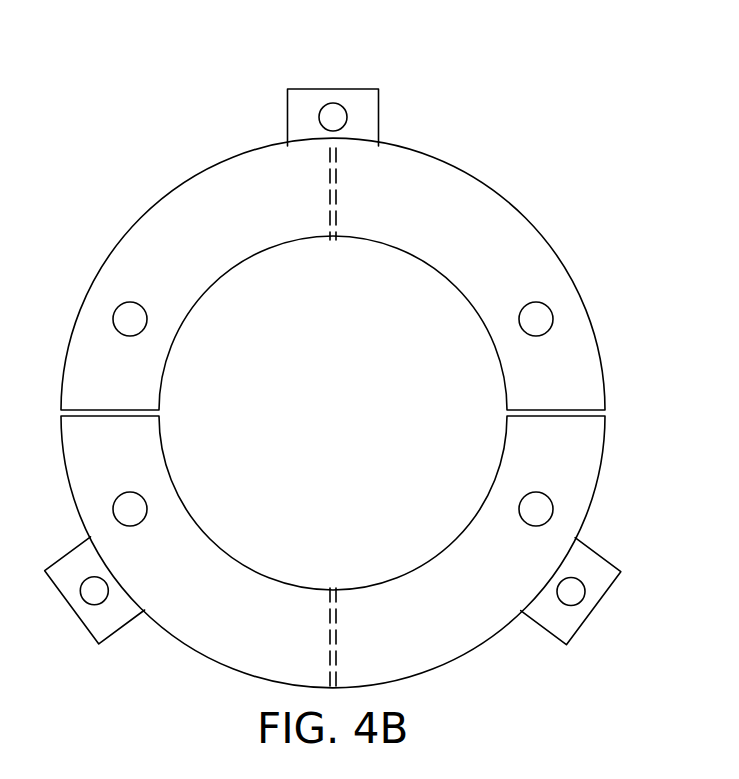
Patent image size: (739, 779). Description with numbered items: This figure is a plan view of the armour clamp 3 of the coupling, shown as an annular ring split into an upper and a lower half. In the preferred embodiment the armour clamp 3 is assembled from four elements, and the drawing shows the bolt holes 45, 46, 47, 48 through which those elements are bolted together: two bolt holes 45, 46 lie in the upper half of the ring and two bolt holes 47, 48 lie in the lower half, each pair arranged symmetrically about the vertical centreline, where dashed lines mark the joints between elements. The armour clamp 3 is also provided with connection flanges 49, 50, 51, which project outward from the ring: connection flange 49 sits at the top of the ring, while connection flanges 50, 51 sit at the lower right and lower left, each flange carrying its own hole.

The armour clamp 3 is at (645, 255).
The bolt hole 45 is at (142, 303).
The bolt hole 46 is at (527, 303).
The bolt hole 47 is at (525, 525).
The bolt hole 48 is at (140, 523).
The connection flange 49 is at (337, 88).
The connection flange 50 is at (597, 608).
The connection flange 51 is at (70, 608).